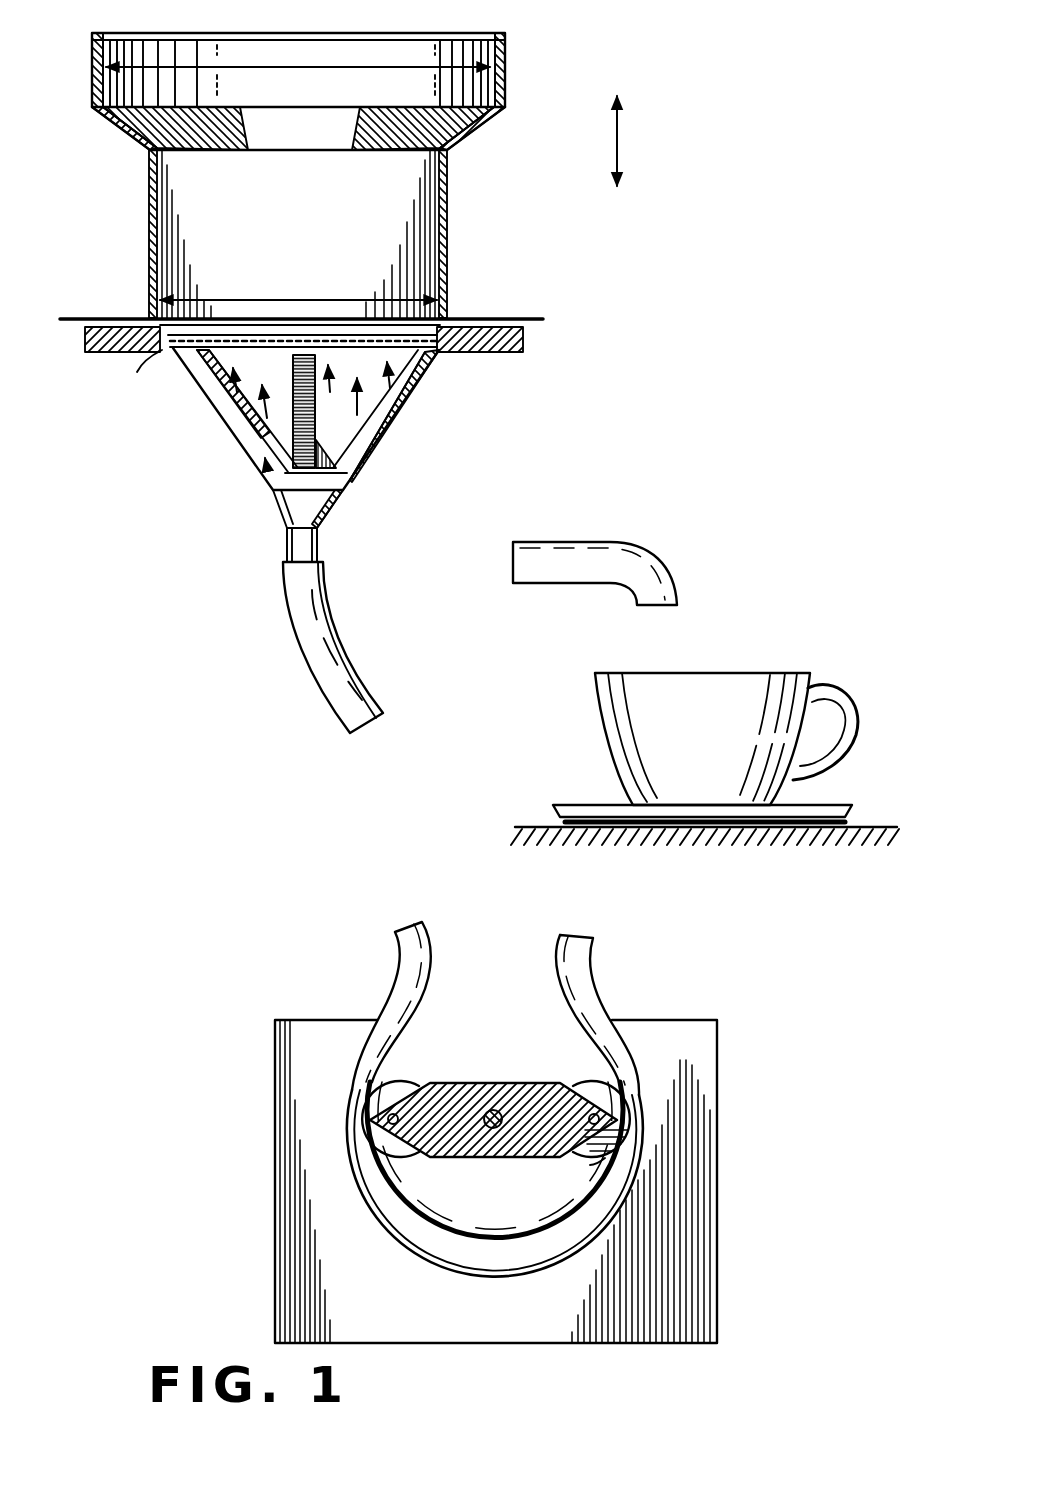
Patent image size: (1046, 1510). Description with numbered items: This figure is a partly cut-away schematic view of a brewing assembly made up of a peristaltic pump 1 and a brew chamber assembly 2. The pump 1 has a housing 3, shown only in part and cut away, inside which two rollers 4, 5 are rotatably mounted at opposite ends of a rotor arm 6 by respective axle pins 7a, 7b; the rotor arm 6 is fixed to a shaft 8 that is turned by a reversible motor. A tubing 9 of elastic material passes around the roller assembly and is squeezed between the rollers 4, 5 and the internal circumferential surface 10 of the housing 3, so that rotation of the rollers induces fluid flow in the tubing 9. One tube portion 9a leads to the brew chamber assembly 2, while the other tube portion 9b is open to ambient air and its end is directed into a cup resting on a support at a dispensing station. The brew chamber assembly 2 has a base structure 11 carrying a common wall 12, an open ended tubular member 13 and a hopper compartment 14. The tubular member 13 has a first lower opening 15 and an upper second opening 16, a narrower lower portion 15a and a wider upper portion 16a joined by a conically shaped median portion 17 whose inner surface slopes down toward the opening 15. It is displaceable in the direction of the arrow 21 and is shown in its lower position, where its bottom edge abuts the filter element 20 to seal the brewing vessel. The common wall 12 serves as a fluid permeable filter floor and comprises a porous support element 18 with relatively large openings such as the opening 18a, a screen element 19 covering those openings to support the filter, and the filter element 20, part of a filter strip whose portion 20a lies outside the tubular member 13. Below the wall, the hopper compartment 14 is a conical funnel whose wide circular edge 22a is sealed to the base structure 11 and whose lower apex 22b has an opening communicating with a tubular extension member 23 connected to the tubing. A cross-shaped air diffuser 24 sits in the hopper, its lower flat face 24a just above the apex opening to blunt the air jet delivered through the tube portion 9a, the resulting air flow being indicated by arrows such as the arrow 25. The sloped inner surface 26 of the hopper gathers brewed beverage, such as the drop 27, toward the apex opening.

The peristaltic pump 1 is at (250, 1186).
The brew chamber assembly 2 is at (545, 300).
The housing 3 is at (717, 1282).
The roller 4 is at (605, 1158).
The roller 5 is at (360, 1147).
The rotor arm 6 is at (528, 1083).
The axle pin 7a is at (600, 1118).
The axle pin 7b is at (390, 1118).
The shaft 8 is at (493, 1110).
The tubing 9 is at (400, 1222).
The tube portion 9a is at (342, 630).
The tube portion 9b is at (612, 545).
The internal circumferential surface 10 is at (422, 1250).
The base structure 11 is at (500, 352).
The common wall 12 is at (315, 324).
The tubular member 13 is at (150, 151).
The hopper compartment 14 is at (248, 464).
The first lower opening 15 is at (287, 300).
The lower portion 15a is at (448, 238).
The upper second opening 16 is at (310, 66).
The upper portion 16a is at (505, 70).
The conically shaped median portion 17 is at (480, 148).
The porous support element 18 is at (197, 368).
The opening 18a is at (428, 368).
The screen element 19 is at (175, 352).
The filter element 20 is at (357, 325).
The filter strip portion 20a is at (135, 322).
The arrow 21 is at (620, 136).
The wide circular edge 22a is at (445, 350).
The lower apex 22b is at (330, 534).
The tubular extension member 23 is at (287, 547).
The air diffuser 24 is at (240, 430).
The lower flat face 24a is at (287, 478).
The arrow 25 is at (322, 472).
The inner surface 26 is at (370, 457).
The drop 27 is at (395, 422).